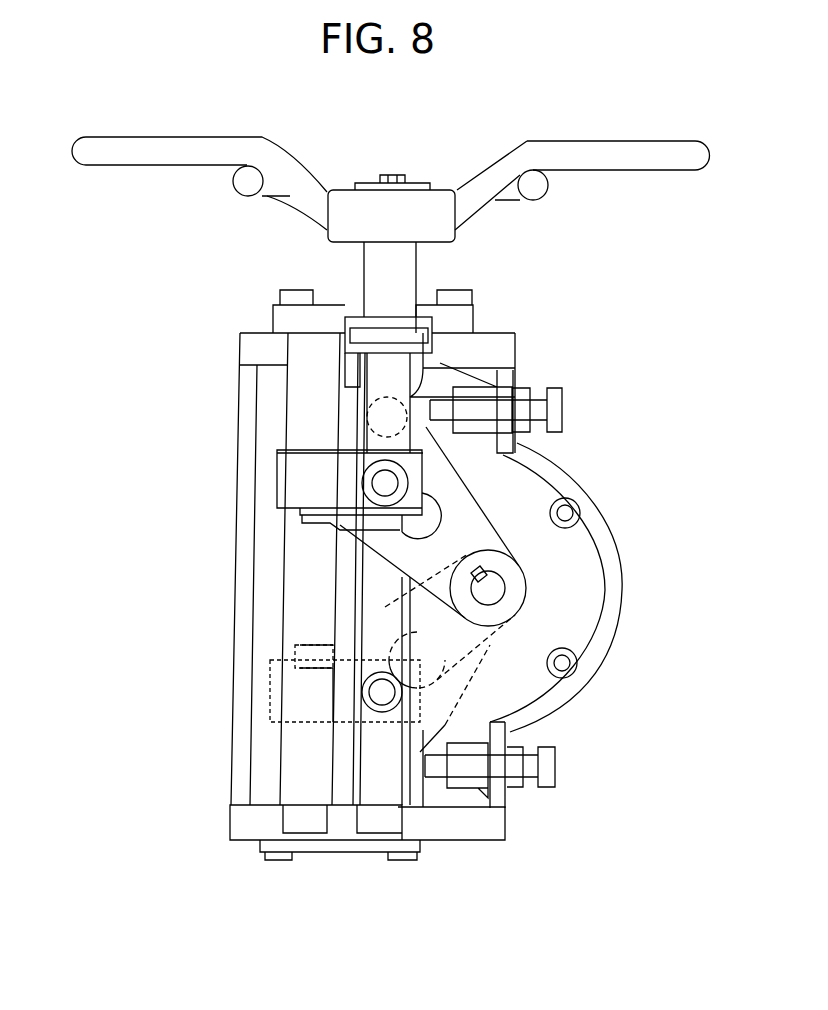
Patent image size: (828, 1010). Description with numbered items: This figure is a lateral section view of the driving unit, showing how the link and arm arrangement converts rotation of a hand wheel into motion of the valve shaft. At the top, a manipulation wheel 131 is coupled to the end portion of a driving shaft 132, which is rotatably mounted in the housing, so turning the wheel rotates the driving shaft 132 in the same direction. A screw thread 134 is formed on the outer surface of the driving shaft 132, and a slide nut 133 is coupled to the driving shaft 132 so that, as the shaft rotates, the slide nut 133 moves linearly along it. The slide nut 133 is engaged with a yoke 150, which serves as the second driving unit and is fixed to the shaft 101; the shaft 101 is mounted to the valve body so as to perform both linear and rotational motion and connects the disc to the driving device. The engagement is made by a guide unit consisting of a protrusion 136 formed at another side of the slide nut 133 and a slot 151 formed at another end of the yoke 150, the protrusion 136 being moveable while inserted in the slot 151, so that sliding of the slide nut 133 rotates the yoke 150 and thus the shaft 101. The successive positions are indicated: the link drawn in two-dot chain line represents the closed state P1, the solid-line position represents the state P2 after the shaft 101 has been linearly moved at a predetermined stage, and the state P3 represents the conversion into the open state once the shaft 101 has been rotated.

The manipulation wheel 131 is at (118, 147).
The driving shaft 132 is at (375, 270).
The screw thread 134 is at (356, 376).
The closed state P1 is at (365, 410).
The protrusion 136 is at (421, 484).
The slide nut 133 is at (287, 477).
The state after linear movement P2 is at (363, 484).
The slot 151 is at (403, 518).
The yoke 150 is at (403, 558).
The open state P3 is at (362, 700).
The shaft 101 is at (493, 583).